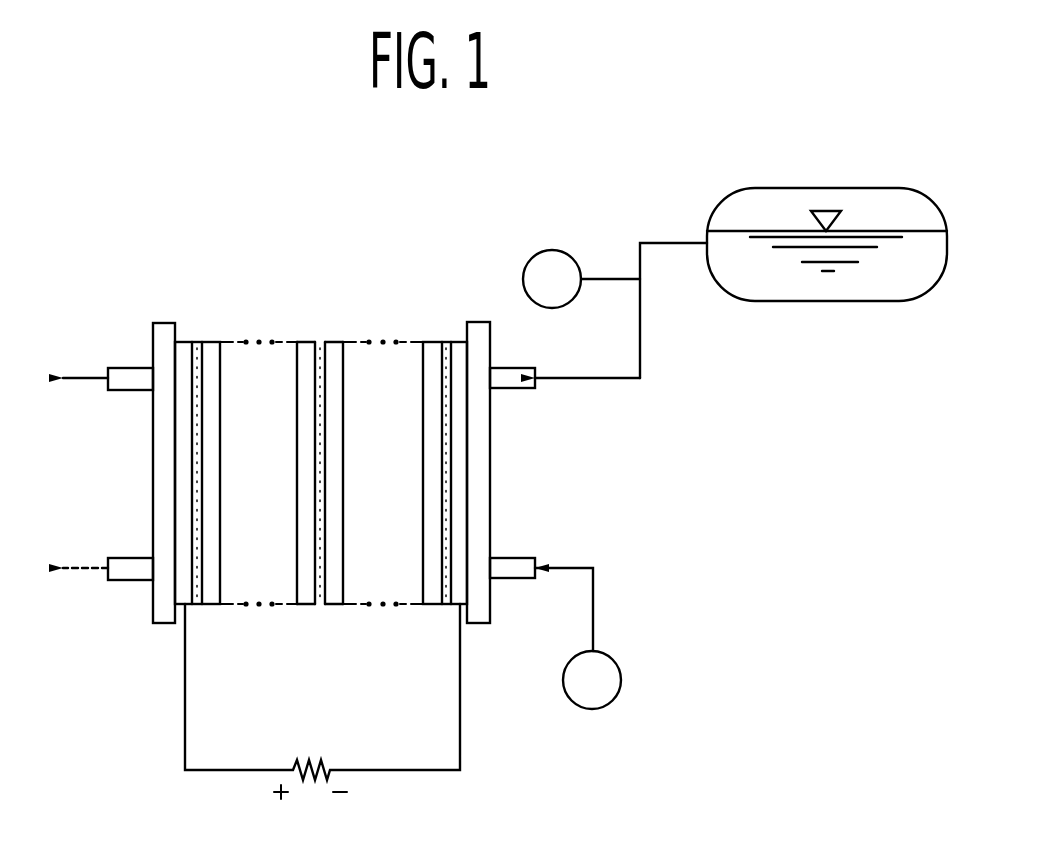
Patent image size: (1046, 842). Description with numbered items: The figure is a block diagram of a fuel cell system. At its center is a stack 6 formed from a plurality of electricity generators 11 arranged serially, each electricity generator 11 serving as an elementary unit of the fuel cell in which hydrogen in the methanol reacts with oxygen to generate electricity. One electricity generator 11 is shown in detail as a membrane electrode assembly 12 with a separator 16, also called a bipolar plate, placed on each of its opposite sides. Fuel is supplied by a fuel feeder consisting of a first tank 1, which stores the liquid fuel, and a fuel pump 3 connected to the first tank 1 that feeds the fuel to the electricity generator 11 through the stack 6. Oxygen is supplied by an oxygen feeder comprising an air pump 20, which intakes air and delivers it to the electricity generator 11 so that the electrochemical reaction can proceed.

The first tank 1 is at (861, 188).
The fuel pump 3 is at (551, 250).
The stack 6 is at (548, 480).
The electricity generator 11 is at (317, 544).
The membrane electrode assembly 12 is at (317, 604).
The separator 16 is at (298, 604).
The air pump 20 is at (595, 710).